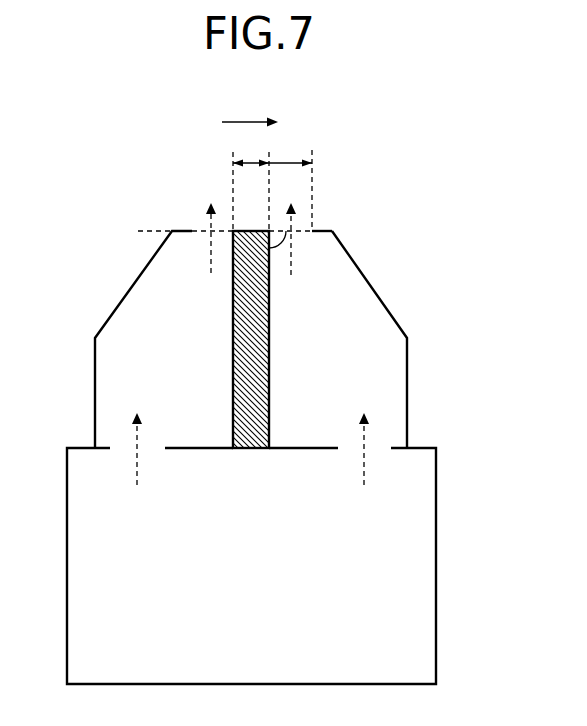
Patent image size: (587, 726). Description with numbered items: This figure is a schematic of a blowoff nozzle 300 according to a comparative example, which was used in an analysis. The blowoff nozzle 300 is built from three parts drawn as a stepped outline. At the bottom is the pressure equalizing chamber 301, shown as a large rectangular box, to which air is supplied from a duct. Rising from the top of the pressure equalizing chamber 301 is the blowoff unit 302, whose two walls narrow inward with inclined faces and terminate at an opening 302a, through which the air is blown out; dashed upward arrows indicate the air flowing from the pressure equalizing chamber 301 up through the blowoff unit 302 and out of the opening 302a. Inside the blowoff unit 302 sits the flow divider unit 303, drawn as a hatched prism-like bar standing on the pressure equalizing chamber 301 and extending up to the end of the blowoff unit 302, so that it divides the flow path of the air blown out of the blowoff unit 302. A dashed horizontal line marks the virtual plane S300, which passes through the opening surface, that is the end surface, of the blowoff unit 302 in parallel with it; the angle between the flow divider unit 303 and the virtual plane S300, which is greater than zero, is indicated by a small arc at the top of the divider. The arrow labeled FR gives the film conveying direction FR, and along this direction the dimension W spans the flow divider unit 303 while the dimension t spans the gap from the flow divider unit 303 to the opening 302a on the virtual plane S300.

The blowoff nozzle 300 is at (447, 389).
The pressure equalizing chamber 301 is at (413, 565).
The blowoff unit 302 is at (367, 320).
The opening 302a is at (310, 225).
The flow divider unit 303 is at (233, 306).
The virtual plane S300 is at (150, 230).
The width of hatched member W is at (251, 182).
The thickness t is at (290, 182).
The film conveying direction FR is at (250, 110).